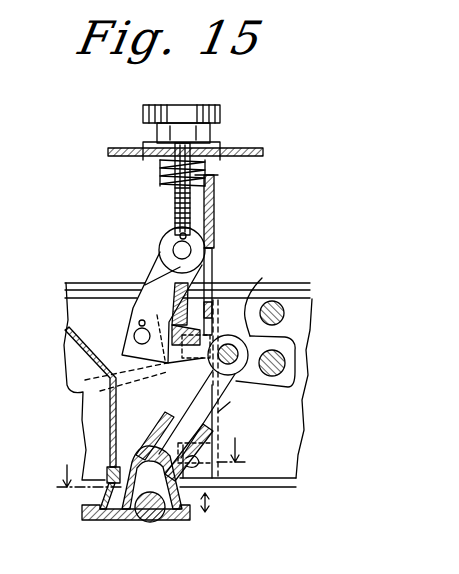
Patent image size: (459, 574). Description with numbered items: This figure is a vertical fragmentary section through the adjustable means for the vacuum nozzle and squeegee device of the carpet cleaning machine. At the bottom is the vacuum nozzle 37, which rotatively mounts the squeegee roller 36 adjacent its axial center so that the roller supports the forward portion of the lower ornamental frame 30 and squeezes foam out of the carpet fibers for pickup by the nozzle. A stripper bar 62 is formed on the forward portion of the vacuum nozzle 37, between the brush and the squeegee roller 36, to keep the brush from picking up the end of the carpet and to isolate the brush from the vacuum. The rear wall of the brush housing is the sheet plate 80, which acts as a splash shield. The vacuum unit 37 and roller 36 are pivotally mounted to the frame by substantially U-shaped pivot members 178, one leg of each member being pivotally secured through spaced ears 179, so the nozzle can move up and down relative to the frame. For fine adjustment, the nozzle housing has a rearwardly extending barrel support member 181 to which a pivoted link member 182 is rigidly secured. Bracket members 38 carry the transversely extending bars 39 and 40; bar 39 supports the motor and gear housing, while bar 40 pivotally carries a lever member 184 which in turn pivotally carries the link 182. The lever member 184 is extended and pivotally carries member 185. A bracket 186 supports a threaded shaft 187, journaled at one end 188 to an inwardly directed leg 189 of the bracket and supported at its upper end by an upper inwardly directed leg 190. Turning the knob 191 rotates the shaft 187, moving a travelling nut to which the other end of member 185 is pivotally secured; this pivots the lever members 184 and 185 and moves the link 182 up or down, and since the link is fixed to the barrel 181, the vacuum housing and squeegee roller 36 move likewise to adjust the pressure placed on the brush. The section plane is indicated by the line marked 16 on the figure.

The knob 191 is at (220, 112).
The upper inwardly directed leg 190 is at (160, 180).
The threaded shaft 187 is at (176, 200).
The bracket 186 is at (214, 212).
The member 185 is at (143, 290).
The lever member 184 is at (263, 283).
The lower ornamental frame 30 is at (300, 282).
The transversely extending bar 39 is at (284, 310).
The bracket member 38 is at (298, 328).
The transversely extending bar 40 is at (286, 363).
The sheet plate 80 is at (75, 360).
The journaled end of shaft 188 is at (84, 378).
The inwardly directed leg 189 is at (97, 389).
The link member 182 is at (198, 390).
The barrel support member 181 is at (163, 428).
The spaced ears 179 is at (219, 412).
The section line 16 is at (153, 451).
The U-shaped pivot member 178 is at (217, 473).
The stripper bar 62 is at (92, 514).
The vacuum nozzle 37 is at (124, 520).
The squeegee roller 36 is at (154, 522).